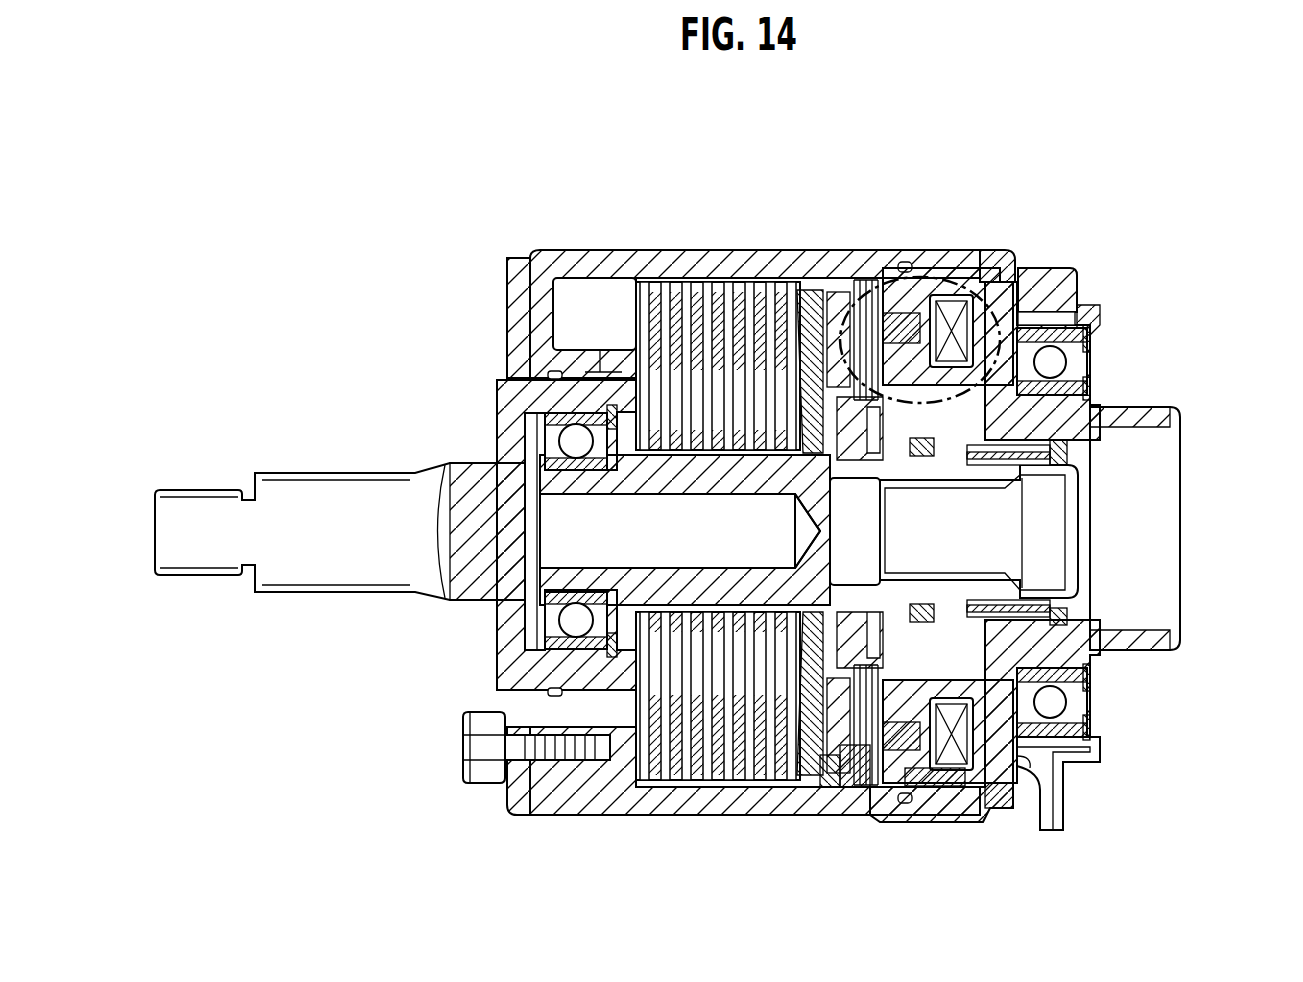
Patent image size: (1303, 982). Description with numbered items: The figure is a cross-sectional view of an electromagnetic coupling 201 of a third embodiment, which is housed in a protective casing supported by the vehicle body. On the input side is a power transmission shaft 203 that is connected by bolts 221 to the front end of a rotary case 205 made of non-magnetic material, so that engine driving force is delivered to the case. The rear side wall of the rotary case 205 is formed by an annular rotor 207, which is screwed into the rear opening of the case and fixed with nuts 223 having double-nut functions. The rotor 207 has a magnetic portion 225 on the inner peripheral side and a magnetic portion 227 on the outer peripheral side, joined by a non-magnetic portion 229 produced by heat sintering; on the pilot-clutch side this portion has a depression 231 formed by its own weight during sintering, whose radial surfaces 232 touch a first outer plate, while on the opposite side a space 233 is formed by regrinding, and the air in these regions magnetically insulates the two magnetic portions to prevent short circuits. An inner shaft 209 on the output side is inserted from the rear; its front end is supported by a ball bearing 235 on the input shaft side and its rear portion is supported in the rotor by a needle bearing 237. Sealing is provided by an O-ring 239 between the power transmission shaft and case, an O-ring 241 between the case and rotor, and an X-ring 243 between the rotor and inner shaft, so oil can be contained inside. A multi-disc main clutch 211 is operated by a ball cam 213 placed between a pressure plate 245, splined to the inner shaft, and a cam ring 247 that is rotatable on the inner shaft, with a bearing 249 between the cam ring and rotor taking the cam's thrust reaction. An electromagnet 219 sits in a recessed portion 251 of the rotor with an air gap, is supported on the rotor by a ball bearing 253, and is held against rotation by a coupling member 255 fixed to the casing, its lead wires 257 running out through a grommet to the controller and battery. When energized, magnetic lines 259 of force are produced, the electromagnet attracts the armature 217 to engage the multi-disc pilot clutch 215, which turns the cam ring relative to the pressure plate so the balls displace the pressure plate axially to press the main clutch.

The electromagnetic coupling 201 is at (399, 160).
The power transmission shaft 203 is at (330, 500).
The rotary case 205 is at (581, 248).
The rotor 207 is at (947, 265).
The inner shaft 209 is at (1079, 465).
The multi-disc main clutch 211 is at (708, 248).
The ball cam 213 is at (849, 583).
The multi-disc pilot clutch 215 is at (858, 248).
The armature 217 is at (830, 250).
The electromagnet 219 is at (1023, 265).
The bolts 221 is at (466, 745).
The nuts 223 is at (988, 250).
The magnetic portion 225 is at (978, 700).
The magnetic portion 227 is at (975, 790).
The non-magnetic portion 229 is at (880, 790).
The depression 231 is at (855, 785).
The radial surfaces 232 is at (815, 800).
The space 233 is at (948, 790).
The ball bearing 235 is at (580, 448).
The needle bearing 237 is at (1000, 480).
The O-ring 239 is at (552, 373).
The O-ring 241 is at (905, 262).
The X-ring 243 is at (922, 460).
The pressure plate 245 is at (790, 478).
The cam ring 247 is at (810, 530).
The bearing 249 is at (875, 470).
The recessed portion 251 is at (1070, 612).
The ball bearing 253 is at (1052, 702).
The coupling member 255 is at (1085, 300).
The lead wires 257 is at (1040, 832).
The magnetic lines of force 259 is at (1103, 405).